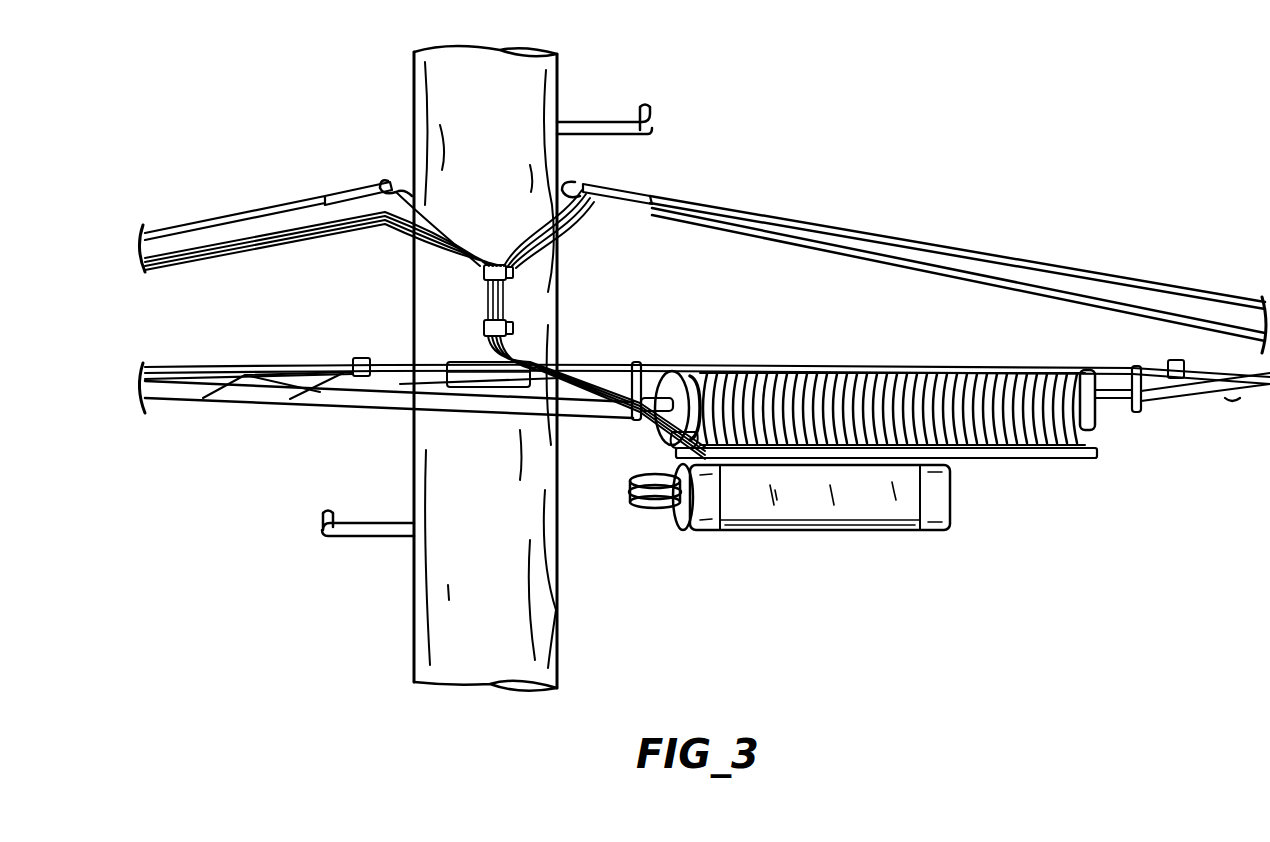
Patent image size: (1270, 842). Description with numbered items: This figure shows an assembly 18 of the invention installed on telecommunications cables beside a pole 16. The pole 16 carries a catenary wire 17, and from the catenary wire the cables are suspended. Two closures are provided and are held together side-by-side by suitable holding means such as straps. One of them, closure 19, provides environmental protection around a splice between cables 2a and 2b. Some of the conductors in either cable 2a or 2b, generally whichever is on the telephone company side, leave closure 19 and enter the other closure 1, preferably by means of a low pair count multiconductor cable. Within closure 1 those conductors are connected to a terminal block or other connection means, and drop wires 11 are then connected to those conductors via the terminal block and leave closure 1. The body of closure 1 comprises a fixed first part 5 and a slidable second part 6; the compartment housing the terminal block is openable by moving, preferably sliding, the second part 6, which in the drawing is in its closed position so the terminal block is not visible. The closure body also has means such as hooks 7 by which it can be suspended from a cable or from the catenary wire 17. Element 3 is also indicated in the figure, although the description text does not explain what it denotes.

The closure 1 is at (858, 447).
The cable 2a is at (405, 398).
The cable 2b is at (1177, 399).
The tubular housing 3 is at (878, 532).
The fixed first part 5 is at (790, 527).
The slidable second part 6 is at (813, 487).
The hooks 7 is at (962, 460).
The drop wires 11 is at (497, 301).
The pole 16 is at (522, 646).
The catenary wire 17 is at (386, 358).
The assembly 18 is at (922, 352).
The closure 19 is at (995, 400).